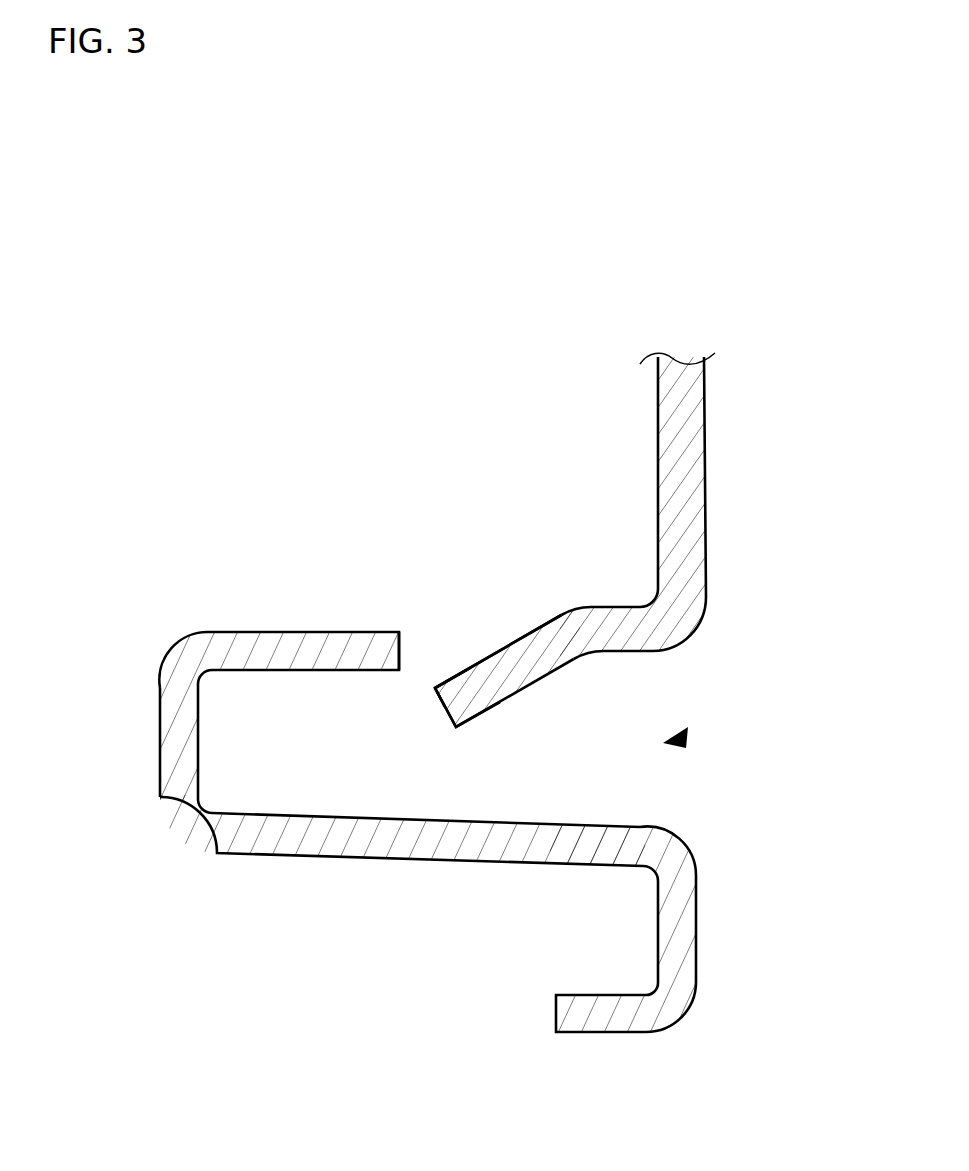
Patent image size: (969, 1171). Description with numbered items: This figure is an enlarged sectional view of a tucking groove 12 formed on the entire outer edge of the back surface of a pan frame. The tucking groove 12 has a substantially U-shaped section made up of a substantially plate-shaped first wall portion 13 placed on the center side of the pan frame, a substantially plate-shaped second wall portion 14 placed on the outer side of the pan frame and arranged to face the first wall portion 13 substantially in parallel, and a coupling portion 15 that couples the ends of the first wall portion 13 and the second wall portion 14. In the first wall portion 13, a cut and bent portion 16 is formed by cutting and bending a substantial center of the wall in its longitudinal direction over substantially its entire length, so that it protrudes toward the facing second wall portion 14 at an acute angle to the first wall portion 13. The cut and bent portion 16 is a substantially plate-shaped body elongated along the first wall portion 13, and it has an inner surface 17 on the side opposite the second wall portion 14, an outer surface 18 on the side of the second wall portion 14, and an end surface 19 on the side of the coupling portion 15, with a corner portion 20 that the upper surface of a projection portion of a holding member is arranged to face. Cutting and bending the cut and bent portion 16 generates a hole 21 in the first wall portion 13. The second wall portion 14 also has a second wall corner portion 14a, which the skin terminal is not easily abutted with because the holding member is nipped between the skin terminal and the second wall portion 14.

The tucking groove 12 is at (690, 733).
The first wall portion 13 is at (265, 647).
The second wall portion 14 is at (357, 842).
The second wall corner portion 14a is at (672, 848).
The coupling portion 15 is at (175, 740).
The cut and bent portion 16 is at (507, 672).
The inner surface 17 is at (479, 663).
The outer surface 18 is at (553, 670).
The end surface 19 is at (443, 712).
The corner portion 20 is at (435, 688).
The hole 21 is at (418, 667).